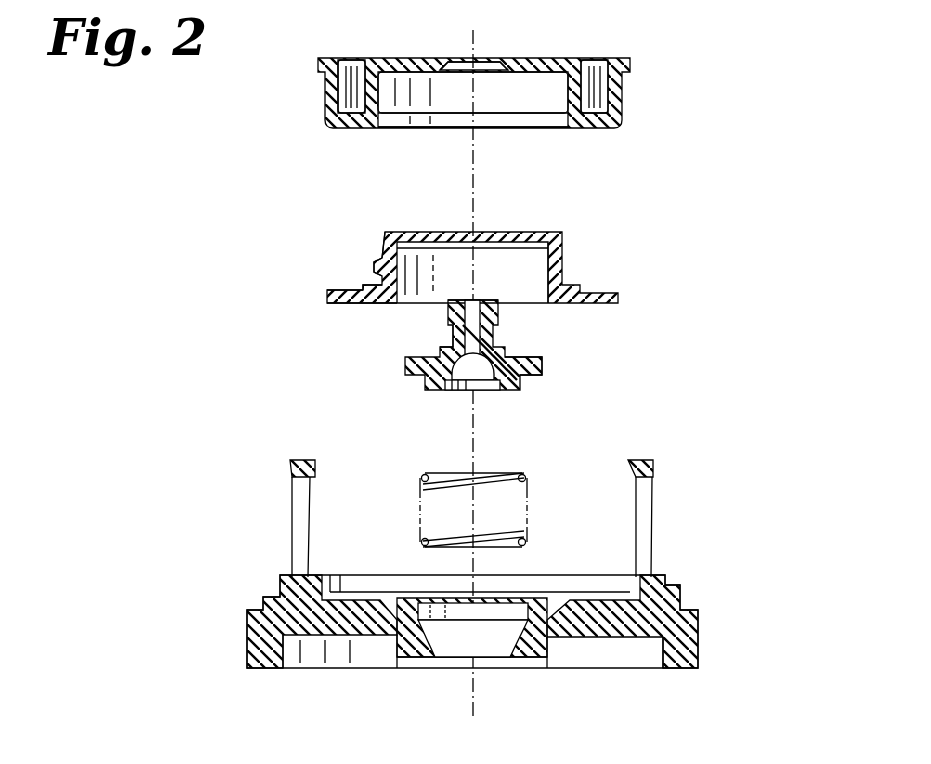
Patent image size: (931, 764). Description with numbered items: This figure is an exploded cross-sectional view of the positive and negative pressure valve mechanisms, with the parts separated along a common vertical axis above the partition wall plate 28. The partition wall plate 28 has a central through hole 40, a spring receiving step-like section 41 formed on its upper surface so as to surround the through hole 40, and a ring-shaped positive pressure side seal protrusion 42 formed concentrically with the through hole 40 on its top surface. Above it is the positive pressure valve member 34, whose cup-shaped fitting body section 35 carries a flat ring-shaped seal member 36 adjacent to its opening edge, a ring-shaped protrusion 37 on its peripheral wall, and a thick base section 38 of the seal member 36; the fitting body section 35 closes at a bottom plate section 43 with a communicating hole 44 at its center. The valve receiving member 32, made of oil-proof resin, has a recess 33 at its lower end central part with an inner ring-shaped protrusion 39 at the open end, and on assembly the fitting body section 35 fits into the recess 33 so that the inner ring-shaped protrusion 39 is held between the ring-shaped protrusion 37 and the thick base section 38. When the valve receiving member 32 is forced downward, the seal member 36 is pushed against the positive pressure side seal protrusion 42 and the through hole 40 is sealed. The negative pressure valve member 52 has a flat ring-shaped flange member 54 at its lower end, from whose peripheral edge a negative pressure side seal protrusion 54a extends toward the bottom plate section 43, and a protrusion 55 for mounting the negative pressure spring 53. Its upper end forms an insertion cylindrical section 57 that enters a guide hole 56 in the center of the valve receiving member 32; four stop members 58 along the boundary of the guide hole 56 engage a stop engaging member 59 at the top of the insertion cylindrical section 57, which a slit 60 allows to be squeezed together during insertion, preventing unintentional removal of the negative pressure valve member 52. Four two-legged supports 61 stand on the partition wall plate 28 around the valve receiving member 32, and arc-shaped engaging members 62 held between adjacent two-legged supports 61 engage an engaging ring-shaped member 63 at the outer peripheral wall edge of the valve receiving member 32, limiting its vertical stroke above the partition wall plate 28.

The partition wall plate 28 is at (690, 622).
The valve receiving member 32 is at (618, 97).
The recess 33 is at (560, 98).
The positive pressure valve member 34 is at (562, 240).
The fitting body section 35 is at (383, 250).
The seal member 36 is at (340, 303).
The ring-shaped protrusion 37 is at (380, 262).
The thick base section 38 is at (365, 287).
The inner ring-shaped protrusion 39 is at (386, 114).
The through hole 40 is at (497, 648).
The spring receiving step-like section 41 is at (420, 653).
The positive pressure side seal protrusion 42 is at (340, 577).
The bottom plate section 43 is at (528, 250).
The communicating hole 44 is at (493, 240).
The negative pressure valve member 52 is at (507, 345).
The negative pressure spring 53 is at (418, 492).
The flange member 54 is at (525, 380).
The negative pressure side seal protrusion 54a is at (543, 360).
The protrusion 55 is at (518, 390).
The guide hole 56 is at (485, 58).
The insertion cylindrical section 57 is at (448, 337).
The stop members 58 is at (443, 58).
The stop engaging member 59 is at (447, 313).
The slit 60 is at (480, 297).
The two-legged supports 61 is at (300, 497).
The arc-shaped engaging members 62 is at (290, 465).
The engaging ring-shaped member 63 is at (318, 70).